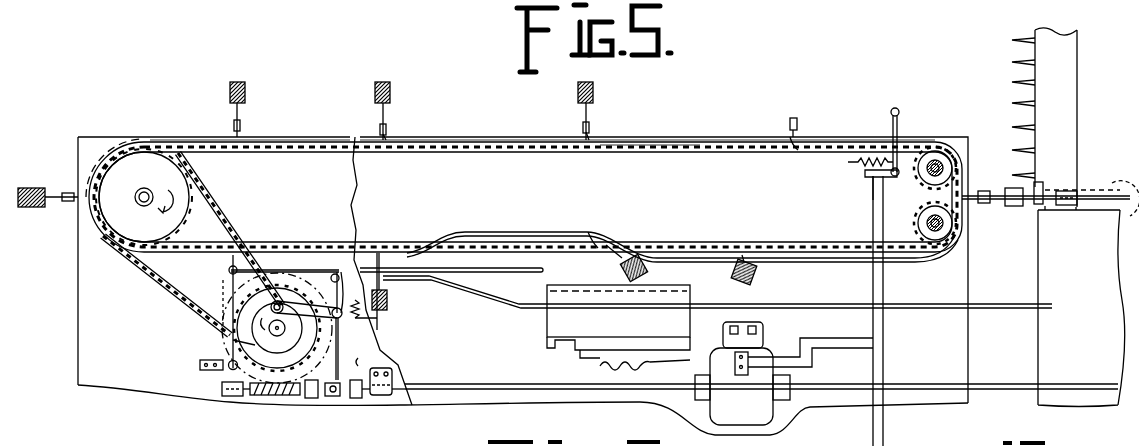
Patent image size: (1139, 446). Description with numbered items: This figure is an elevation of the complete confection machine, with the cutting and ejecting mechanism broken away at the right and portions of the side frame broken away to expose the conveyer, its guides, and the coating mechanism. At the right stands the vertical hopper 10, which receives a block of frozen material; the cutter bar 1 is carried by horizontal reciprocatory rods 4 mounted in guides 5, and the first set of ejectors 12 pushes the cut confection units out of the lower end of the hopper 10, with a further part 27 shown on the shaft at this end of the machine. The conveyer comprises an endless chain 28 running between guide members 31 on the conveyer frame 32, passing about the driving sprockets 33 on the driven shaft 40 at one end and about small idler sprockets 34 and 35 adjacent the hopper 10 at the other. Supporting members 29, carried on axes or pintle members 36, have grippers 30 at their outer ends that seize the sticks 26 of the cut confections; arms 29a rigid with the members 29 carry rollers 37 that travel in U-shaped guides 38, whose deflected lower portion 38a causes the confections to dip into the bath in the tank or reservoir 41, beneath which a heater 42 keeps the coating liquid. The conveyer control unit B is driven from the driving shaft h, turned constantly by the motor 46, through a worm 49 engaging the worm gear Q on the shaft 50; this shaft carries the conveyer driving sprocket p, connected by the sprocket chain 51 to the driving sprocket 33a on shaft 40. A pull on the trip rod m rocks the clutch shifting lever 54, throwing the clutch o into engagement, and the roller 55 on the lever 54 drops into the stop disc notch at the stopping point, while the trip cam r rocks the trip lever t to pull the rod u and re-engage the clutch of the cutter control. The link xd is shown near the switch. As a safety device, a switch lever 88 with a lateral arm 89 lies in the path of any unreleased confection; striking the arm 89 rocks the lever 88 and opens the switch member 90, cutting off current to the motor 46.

The cutter bar 1 is at (1040, 190).
The horizontal reciprocatory rods 4 is at (1052, 212).
The guides 5 is at (1076, 208).
The vertical hopper 10 is at (1060, 140).
The first set of ejectors 12 is at (1018, 206).
The sticks 26 is at (252, 105).
The gear 27 is at (1080, 198).
The conveyer chain 28 is at (625, 142).
The supporting members 29 is at (393, 125).
The arms 29a is at (818, 160).
The grippers 30 is at (233, 125).
The guide members 31 is at (505, 132).
The frame of the conveyer 32 is at (668, 145).
The driving sprockets 33 is at (128, 182).
The driving sprocket 33a is at (163, 174).
The small idler sprocket 34 is at (938, 160).
The small idler sprocket 35 is at (950, 225).
The axes or pintle members 36 is at (252, 143).
The rollers 37 is at (605, 238).
The U-shaped guides 38 is at (322, 133).
The deflected lower portion of the guide means 38a is at (533, 222).
The driven shaft 40 is at (138, 200).
The tank or reservoir 41 is at (547, 328).
The heater 42 is at (585, 352).
The motor 46 is at (784, 373).
The worm 49 is at (280, 396).
The shaft 50 is at (277, 328).
The sprocket chain 51 is at (165, 285).
The clutch shifting lever 54 is at (378, 328).
The roller 55 is at (290, 300).
The switch lever 88 is at (910, 125).
The lateral arm 89 is at (895, 108).
The switch member 90 is at (870, 160).
The link xd is at (870, 178).
The conveyer driving sprocket p is at (242, 265).
The trip lever t is at (222, 290).
The trip cam r is at (262, 322).
The conveyer control unit B is at (232, 340).
The worm gear Q is at (200, 364).
The rod u is at (530, 272).
The trip rod m is at (505, 300).
The driving shaft h is at (450, 384).
The clutch o is at (356, 362).